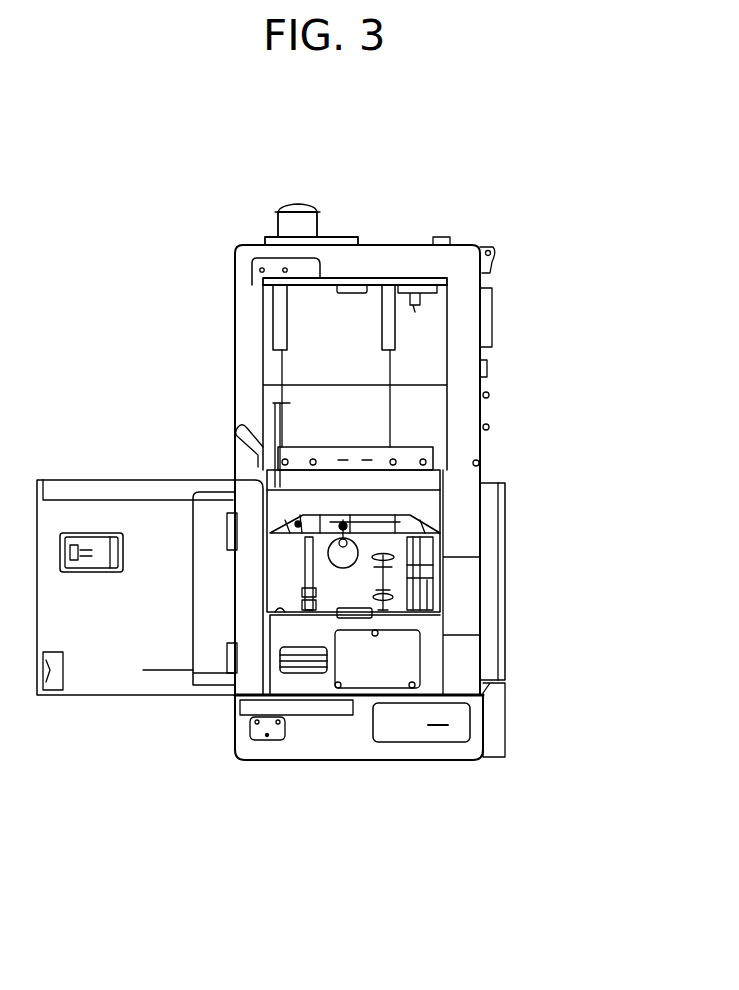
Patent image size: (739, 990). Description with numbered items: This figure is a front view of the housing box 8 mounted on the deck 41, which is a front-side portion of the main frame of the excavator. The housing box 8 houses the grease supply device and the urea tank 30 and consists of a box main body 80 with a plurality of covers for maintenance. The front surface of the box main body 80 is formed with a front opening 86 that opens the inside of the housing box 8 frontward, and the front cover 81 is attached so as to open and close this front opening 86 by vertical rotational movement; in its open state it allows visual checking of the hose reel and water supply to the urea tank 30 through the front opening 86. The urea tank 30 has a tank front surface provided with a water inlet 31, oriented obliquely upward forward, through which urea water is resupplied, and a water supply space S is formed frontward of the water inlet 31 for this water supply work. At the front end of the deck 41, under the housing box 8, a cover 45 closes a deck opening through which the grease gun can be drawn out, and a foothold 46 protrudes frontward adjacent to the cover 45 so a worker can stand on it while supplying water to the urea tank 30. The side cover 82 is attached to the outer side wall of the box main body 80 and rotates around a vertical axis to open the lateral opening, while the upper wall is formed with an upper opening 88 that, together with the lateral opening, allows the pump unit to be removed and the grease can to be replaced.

The housing box 8 is at (527, 450).
The front cover 81 is at (418, 335).
The water supply space S is at (323, 590).
The water inlet 31 is at (395, 547).
The urea tank 30 is at (408, 570).
The box main body 80 is at (460, 615).
The front opening 86 is at (280, 630).
The deck 41 is at (361, 772).
The foothold 46 is at (303, 705).
The cover 45 is at (405, 723).
The side cover 82 is at (113, 513).
The upper opening 88 is at (233, 587).